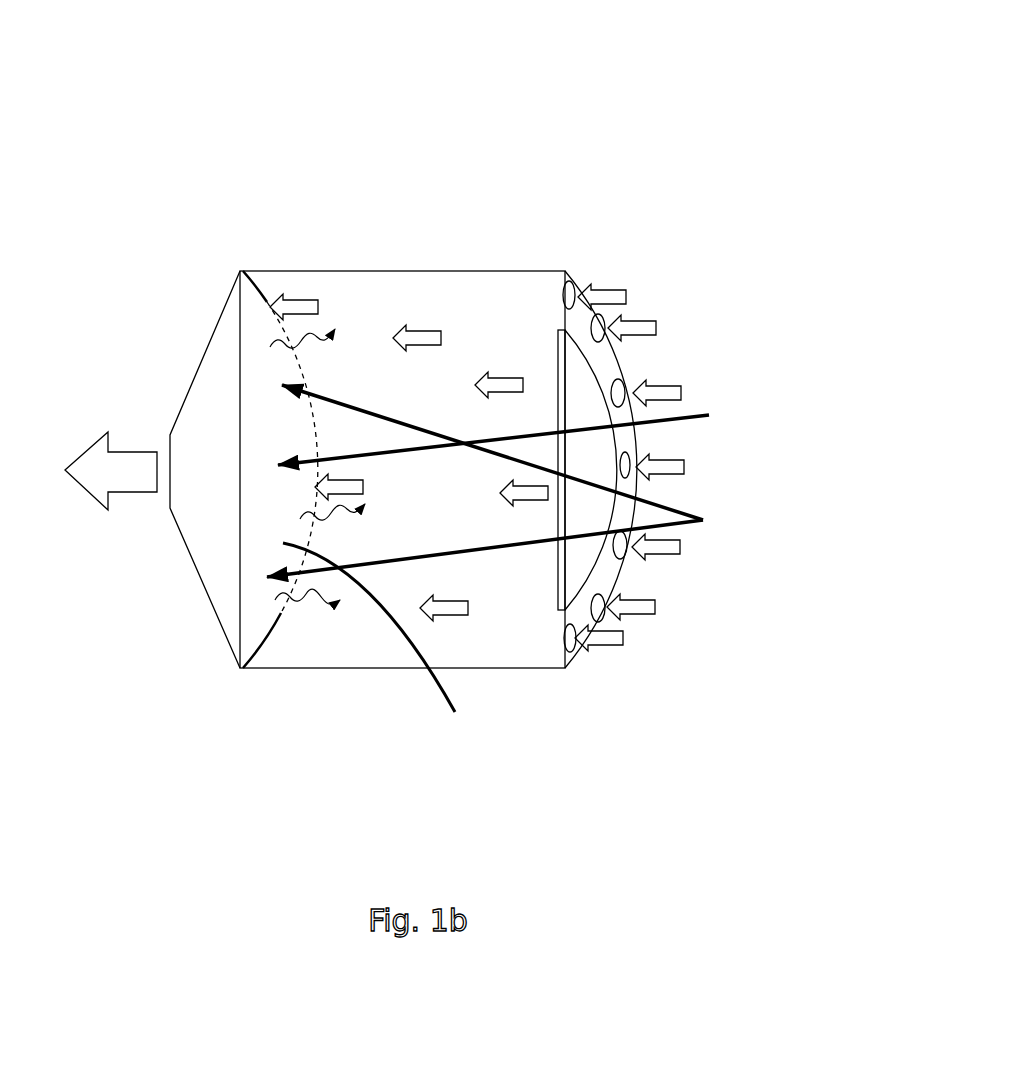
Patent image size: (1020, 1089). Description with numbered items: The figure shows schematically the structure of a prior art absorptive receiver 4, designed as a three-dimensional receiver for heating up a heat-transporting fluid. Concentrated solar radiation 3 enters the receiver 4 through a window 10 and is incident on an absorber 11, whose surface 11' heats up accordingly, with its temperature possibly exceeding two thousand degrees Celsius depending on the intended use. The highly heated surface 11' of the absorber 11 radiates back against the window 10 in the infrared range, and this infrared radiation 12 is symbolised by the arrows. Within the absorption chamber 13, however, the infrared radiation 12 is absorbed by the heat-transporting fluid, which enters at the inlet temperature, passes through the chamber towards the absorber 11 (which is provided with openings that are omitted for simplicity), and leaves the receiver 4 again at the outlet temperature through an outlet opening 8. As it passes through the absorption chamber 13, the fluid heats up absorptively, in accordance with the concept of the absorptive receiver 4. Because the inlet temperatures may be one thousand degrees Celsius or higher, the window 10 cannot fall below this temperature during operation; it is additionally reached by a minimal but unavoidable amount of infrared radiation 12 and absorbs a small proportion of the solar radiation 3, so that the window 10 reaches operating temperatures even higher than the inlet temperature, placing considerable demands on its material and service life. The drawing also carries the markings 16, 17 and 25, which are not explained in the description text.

The absorptive receiver 4 is at (524, 148).
The absorption chamber 13 is at (383, 304).
The outlet opening 8 is at (170, 435).
The absorber 11 is at (280, 469).
The surface of the absorber 11' is at (387, 642).
The infrared radiation 12 is at (318, 338).
The window 10 is at (571, 420).
The gap 25 is at (568, 611).
The openings 17 is at (623, 375).
The inlet region 16 is at (790, 273).
The solar radiation 3 is at (692, 425).